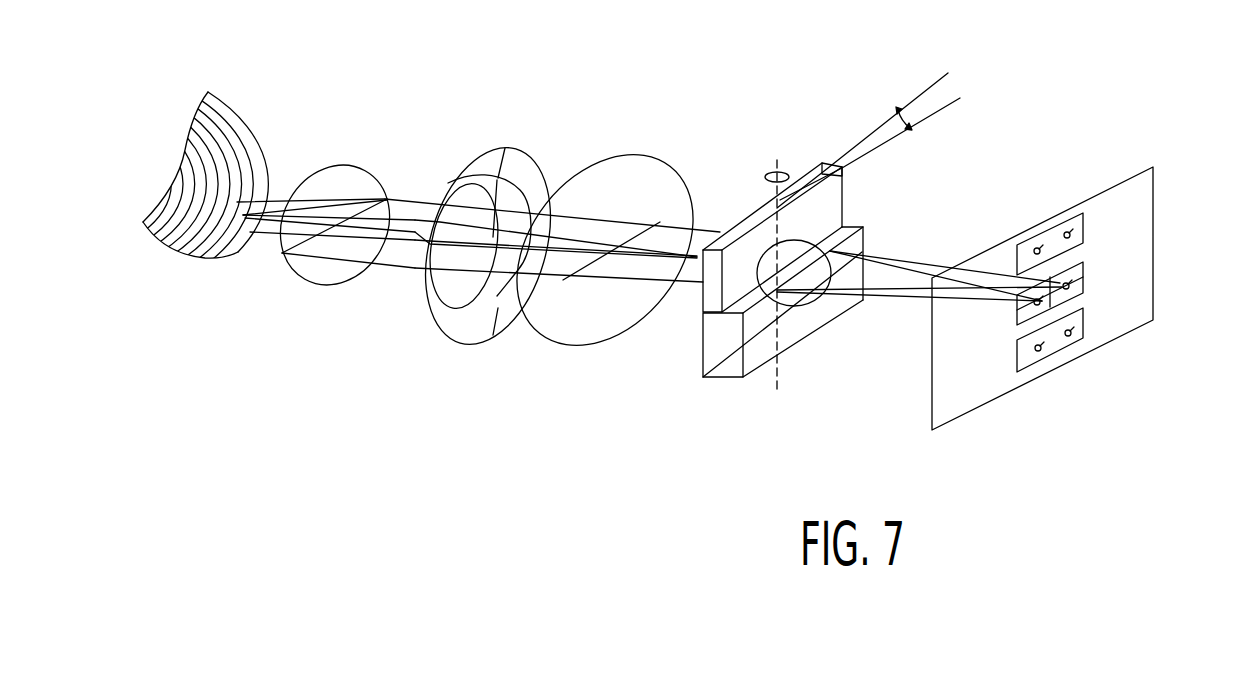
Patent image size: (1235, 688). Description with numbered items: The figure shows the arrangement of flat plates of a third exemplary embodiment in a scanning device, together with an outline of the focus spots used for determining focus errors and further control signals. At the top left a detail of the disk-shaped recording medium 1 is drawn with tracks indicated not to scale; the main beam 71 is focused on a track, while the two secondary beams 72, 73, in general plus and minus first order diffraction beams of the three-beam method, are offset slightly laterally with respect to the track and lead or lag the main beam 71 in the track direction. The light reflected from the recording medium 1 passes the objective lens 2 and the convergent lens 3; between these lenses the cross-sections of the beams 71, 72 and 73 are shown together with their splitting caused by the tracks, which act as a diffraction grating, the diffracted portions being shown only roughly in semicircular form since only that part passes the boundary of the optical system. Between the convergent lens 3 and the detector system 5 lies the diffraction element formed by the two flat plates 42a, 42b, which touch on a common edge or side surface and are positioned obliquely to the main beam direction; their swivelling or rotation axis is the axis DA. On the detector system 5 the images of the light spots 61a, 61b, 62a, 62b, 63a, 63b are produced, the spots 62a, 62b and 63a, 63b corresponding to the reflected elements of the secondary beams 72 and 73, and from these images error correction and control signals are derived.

The recording medium 1 is at (263, 157).
The main beam 71 is at (242, 253).
The secondary beam 72 is at (255, 207).
The objective lens 2 is at (287, 270).
The secondary beam 73 is at (292, 258).
The convergent lens 3 is at (622, 152).
The swivelling or rotation axis DA is at (762, 175).
The flat plate 42a is at (827, 163).
The flat plate 42b is at (772, 342).
The detector system 5 is at (1140, 170).
The light spot 63a is at (1067, 235).
The light spot 63b is at (1038, 250).
The light spot 61a is at (1065, 287).
The light spot 61b is at (1038, 302).
The light spot 62a is at (1070, 333).
The light spot 62b is at (1040, 348).